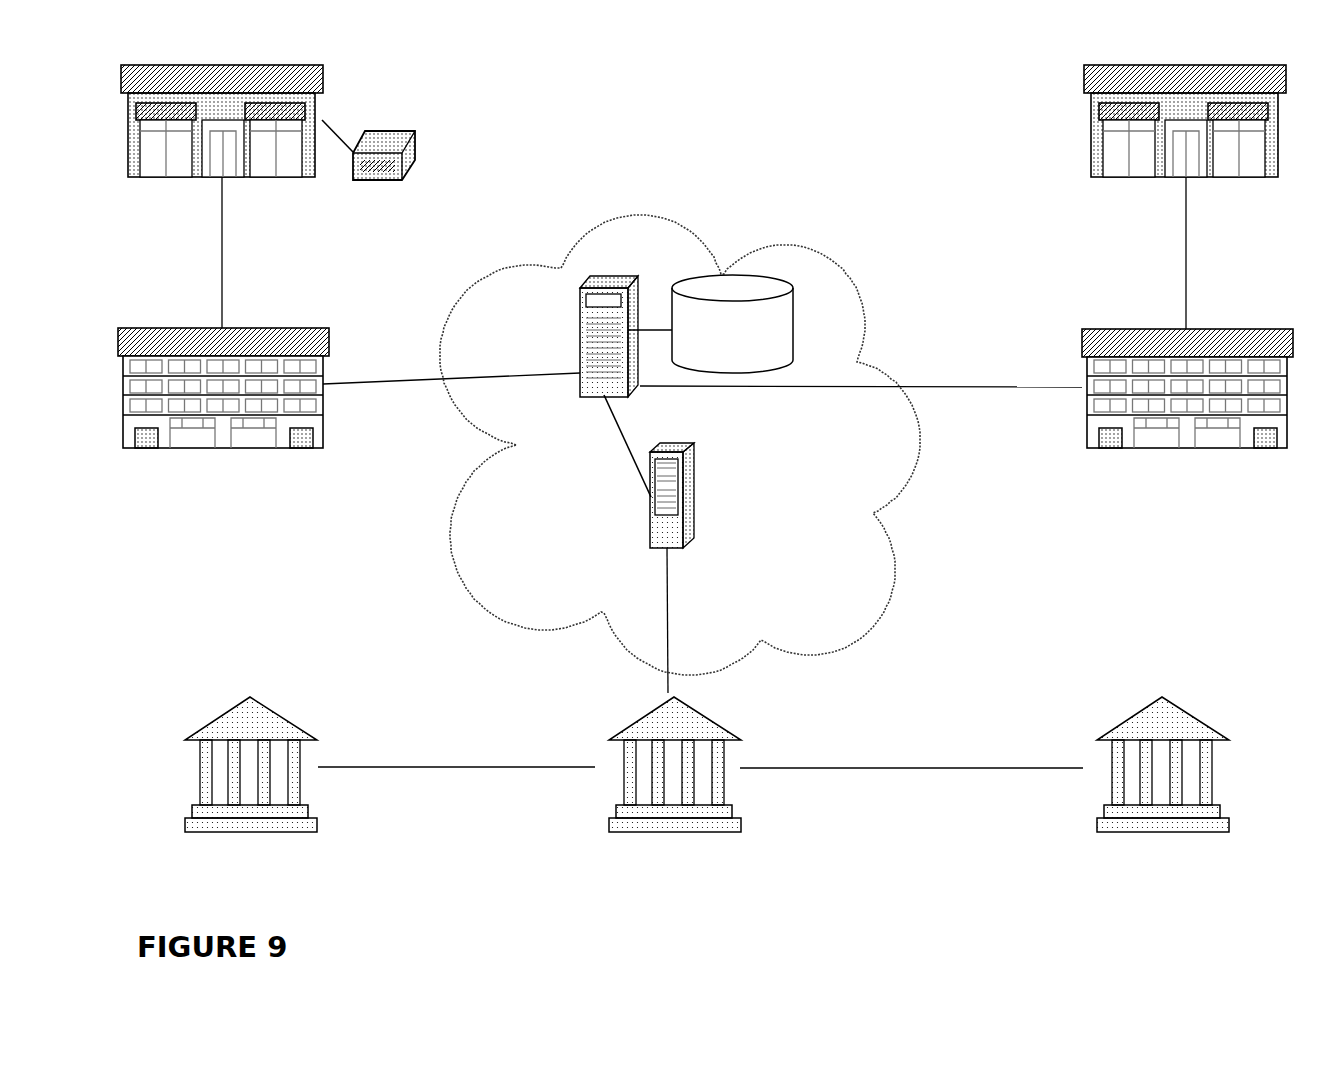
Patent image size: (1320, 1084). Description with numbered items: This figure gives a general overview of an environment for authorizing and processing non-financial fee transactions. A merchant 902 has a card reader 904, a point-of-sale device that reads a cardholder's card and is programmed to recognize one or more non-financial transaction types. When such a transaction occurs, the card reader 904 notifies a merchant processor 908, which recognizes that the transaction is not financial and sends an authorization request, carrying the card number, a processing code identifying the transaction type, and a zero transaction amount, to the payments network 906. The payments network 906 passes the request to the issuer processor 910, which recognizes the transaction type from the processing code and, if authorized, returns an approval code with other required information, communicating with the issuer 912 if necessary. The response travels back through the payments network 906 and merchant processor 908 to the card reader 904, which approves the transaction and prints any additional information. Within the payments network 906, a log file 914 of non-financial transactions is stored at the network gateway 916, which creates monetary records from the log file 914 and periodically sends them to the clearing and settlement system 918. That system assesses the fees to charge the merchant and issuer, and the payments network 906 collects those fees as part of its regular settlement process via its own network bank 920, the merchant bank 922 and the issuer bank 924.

The merchant 902 is at (152, 183).
The card reader 904 is at (385, 128).
The payments network 906 is at (640, 221).
The merchant processor 908 is at (191, 328).
The issuer processor 910 is at (1082, 333).
The issuer 912 is at (1115, 183).
The log file 914 is at (795, 326).
The network gateway 916 is at (581, 343).
The clearing and settlement system 918 is at (697, 518).
The network bank 920 is at (637, 719).
The merchant bank 922 is at (217, 718).
The issuer bank 924 is at (1130, 718).